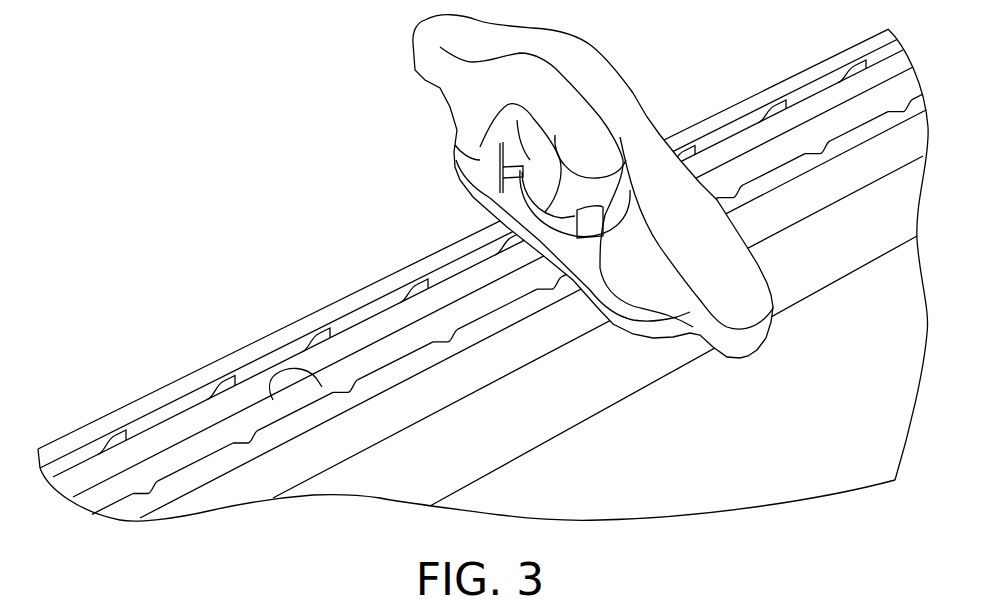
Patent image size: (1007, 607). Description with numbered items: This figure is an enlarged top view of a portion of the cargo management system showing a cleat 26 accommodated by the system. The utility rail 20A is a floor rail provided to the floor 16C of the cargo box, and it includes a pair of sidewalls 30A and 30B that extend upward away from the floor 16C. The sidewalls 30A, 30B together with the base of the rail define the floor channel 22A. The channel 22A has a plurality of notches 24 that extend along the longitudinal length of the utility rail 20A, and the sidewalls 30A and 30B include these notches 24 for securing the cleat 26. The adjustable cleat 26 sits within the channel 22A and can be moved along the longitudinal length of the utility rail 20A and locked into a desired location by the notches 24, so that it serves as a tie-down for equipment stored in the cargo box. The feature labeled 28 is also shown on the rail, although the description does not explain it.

The floor 16C is at (688, 467).
The utility rail 20A is at (378, 460).
The floor channel 22A is at (388, 326).
The notches 24 is at (153, 487).
The cleat 26 is at (593, 43).
The rib 28 is at (273, 400).
The sidewall 30A is at (340, 312).
The sidewall 30B is at (493, 322).